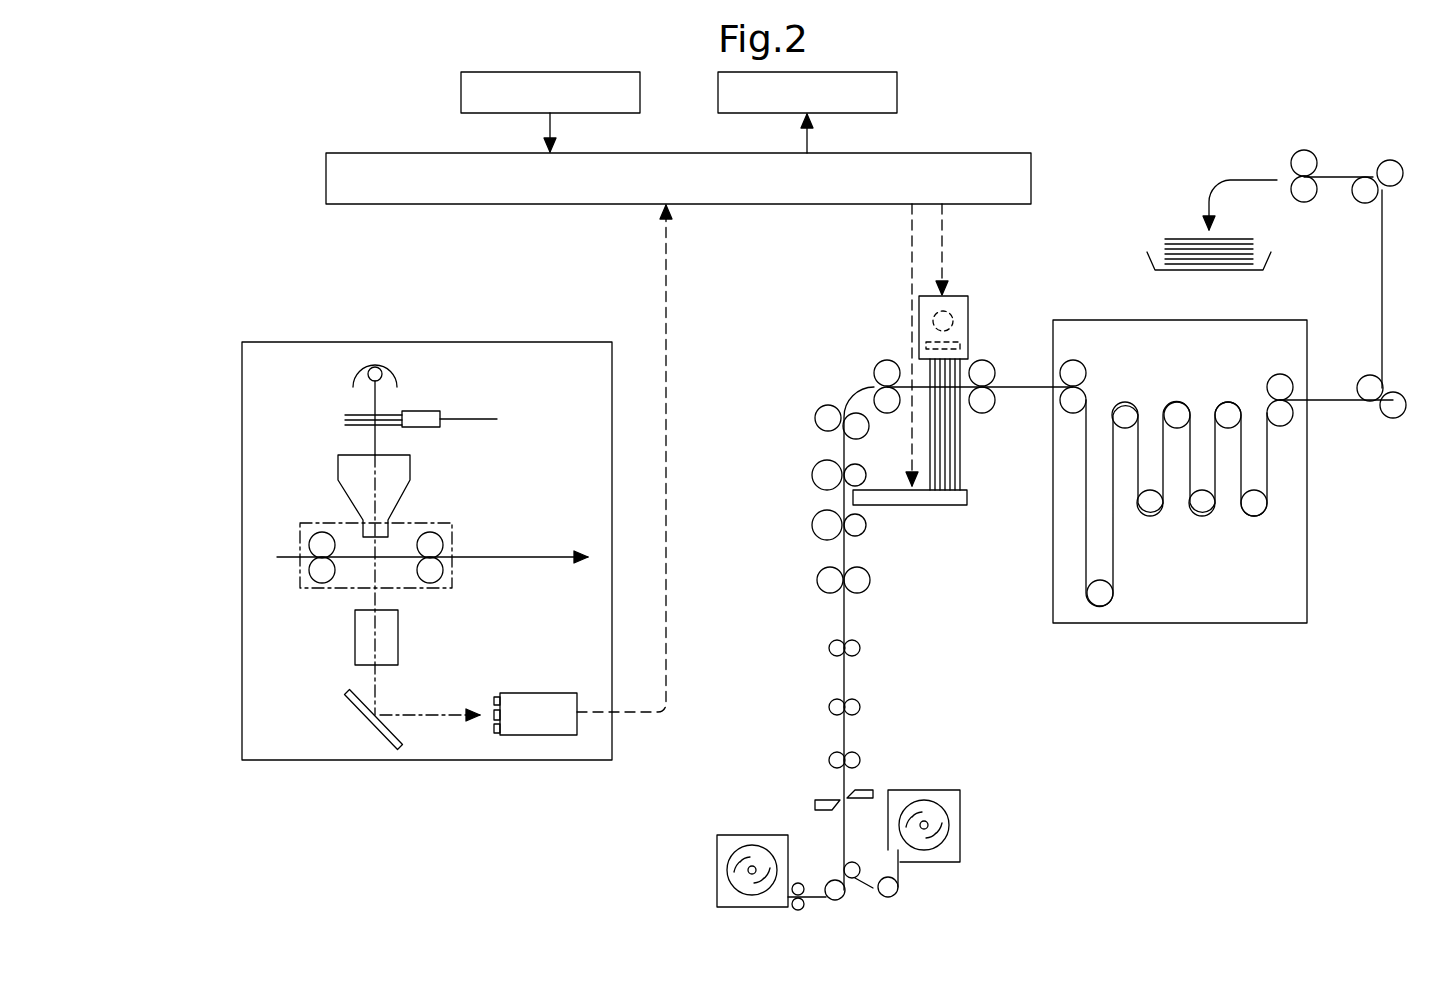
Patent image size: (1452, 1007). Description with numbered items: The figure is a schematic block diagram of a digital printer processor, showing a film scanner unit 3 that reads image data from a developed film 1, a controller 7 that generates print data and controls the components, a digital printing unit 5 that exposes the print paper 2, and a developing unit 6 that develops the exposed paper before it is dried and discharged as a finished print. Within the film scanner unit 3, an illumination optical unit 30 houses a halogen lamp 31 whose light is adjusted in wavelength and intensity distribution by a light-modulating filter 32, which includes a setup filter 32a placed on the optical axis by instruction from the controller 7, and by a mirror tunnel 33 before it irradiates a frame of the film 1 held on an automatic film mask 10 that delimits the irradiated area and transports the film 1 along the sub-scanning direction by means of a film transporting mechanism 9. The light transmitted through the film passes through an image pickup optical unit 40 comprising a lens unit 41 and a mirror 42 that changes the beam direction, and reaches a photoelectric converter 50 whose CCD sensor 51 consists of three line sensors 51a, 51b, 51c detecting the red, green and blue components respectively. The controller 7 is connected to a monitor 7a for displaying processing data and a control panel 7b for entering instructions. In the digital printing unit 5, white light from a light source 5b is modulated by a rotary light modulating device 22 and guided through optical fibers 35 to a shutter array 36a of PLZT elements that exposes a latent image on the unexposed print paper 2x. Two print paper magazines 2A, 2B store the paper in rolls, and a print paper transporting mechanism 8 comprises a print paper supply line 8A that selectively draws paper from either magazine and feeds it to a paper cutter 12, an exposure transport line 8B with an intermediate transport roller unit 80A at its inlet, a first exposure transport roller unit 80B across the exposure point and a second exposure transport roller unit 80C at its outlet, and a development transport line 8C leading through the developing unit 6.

The film 1 is at (553, 555).
The print paper 2 is at (1185, 238).
The print paper magazine 2A is at (716, 860).
The print paper magazine 2B is at (960, 835).
The unexposed print paper 2x is at (846, 733).
The film scanner unit 3 is at (276, 342).
The digital printing unit 5 is at (868, 310).
The light source 5b is at (963, 300).
The developing unit 6 is at (1112, 320).
The controller 7 is at (1032, 170).
The monitor 7a is at (718, 110).
The control panel 7b is at (461, 92).
The print paper transporting mechanism 8 is at (1046, 653).
The print paper supply line 8A is at (908, 880).
The exposure transport line 8B is at (873, 582).
The development transport line 8C is at (1197, 530).
The film transporting mechanism 9 is at (313, 583).
The automatic film mask 10 is at (300, 530).
The paper cutter 12 is at (818, 803).
The rotary light modulating device 22 is at (920, 343).
The illumination optical unit 30 is at (330, 443).
The halogen lamp 31 is at (396, 380).
The light-modulating filter 32 is at (443, 412).
The setup filter 32a is at (496, 421).
The mirror tunnel 33 is at (337, 458).
The optical fibers 35 is at (960, 427).
The shutter array 36a is at (953, 508).
The image pickup optical unit 40 is at (308, 713).
The lens unit 41 is at (355, 655).
The mirror 42 is at (377, 728).
The photoelectric converter 50 is at (540, 693).
The CCD sensor 51 is at (495, 709).
The CCD sensor for red 51a is at (495, 698).
The CCD sensor for green 51b is at (495, 712).
The CCD sensor for blue 51c is at (495, 728).
The intermediate transport roller unit 80A is at (813, 578).
The first exposure transport roller unit 80B is at (808, 527).
The second exposure transport roller unit 80C is at (812, 462).